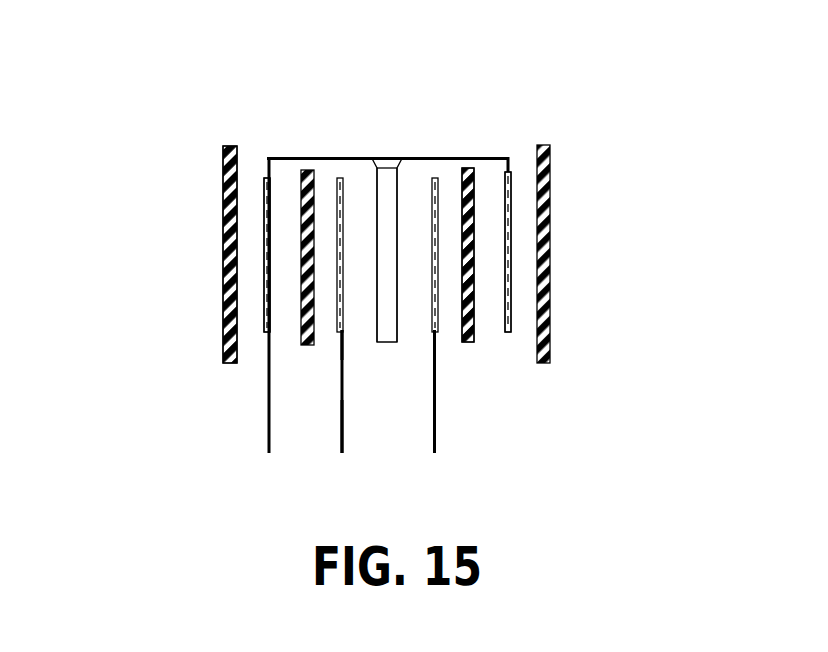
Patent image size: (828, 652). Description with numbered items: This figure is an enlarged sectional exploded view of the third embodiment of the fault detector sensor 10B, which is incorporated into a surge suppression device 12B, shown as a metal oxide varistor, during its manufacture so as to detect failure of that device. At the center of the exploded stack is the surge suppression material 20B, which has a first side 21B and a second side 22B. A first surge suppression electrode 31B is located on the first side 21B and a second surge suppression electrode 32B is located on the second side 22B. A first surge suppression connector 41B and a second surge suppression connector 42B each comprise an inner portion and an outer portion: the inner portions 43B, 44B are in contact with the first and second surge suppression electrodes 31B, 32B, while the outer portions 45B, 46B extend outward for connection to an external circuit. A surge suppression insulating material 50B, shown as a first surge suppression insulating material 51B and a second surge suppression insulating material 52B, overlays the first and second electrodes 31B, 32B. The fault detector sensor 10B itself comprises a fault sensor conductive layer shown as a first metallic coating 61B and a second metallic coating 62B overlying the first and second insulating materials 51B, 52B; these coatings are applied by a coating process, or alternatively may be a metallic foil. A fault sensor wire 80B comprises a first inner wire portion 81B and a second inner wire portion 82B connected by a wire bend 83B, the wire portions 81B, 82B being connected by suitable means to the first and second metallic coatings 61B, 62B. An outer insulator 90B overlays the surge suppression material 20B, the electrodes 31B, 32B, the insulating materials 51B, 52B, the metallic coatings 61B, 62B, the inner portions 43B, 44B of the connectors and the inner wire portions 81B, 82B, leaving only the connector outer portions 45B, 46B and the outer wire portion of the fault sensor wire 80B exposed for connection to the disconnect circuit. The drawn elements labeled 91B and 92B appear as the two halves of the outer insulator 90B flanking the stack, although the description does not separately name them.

The fault detector sensor 10B is at (233, 58).
The surge suppression device 12B is at (320, 78).
The surge suppression material 20B is at (387, 342).
The first side 21B is at (373, 157).
The second side 22B is at (402, 157).
The first surge suppression electrode 31B is at (341, 178).
The second surge suppression electrode 32B is at (435, 178).
The first surge suppression connector 41B is at (340, 398).
The second surge suppression connector 42B is at (436, 401).
The inner portion 43B is at (340, 338).
The inner portion 44B is at (436, 338).
The outer portion 45B is at (342, 453).
The outer portion 46B is at (434, 453).
The surge suppression insulating material 50B is at (468, 332).
The first surge suppression insulating material 51B is at (302, 171).
The second surge suppression insulating material 52B is at (473, 167).
The first metallic coating 61B is at (264, 307).
The second metallic coating 62B is at (511, 310).
The fault sensor wire 80B is at (268, 453).
The first inner wire portion 81B is at (266, 171).
The second inner wire portion 82B is at (509, 172).
The wire bend 83B is at (271, 157).
The outer insulator 90B is at (223, 163).
The outer shield plate 91B is at (224, 243).
The second outer shield plate 92B is at (550, 246).